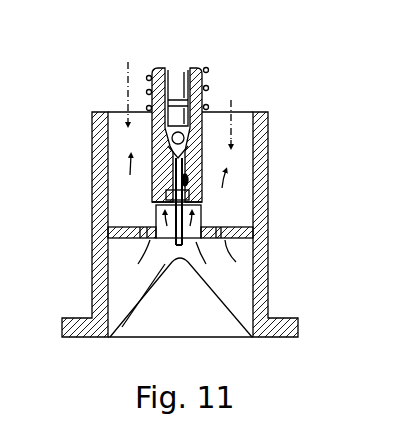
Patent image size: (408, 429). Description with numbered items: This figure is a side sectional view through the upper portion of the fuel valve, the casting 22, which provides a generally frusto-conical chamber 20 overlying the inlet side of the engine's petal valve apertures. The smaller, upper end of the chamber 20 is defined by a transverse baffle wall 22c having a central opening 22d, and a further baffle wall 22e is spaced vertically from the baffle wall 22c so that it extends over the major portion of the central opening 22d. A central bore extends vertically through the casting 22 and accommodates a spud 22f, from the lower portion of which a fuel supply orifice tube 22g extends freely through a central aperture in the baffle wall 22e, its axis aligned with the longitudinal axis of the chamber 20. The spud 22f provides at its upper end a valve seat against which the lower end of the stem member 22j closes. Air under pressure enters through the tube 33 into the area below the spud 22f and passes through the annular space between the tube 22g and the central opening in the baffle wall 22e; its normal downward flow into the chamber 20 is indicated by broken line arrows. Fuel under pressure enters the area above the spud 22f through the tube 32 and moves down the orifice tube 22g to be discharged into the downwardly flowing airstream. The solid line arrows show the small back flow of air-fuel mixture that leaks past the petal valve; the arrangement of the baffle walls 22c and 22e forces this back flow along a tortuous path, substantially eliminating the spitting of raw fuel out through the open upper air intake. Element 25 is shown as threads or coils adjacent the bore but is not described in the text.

The casting 22 is at (93, 170).
The stem member 22j is at (178, 78).
The spring coil 25 is at (208, 88).
The tube 32 is at (160, 143).
The spud 22f is at (199, 158).
The tube 33 is at (167, 184).
The central opening 22d is at (228, 215).
The baffle wall 22e is at (110, 226).
The fuel supply orifice tube 22g is at (172, 243).
The baffle wall 22c is at (242, 240).
The frusto-conical chamber 20 is at (195, 327).